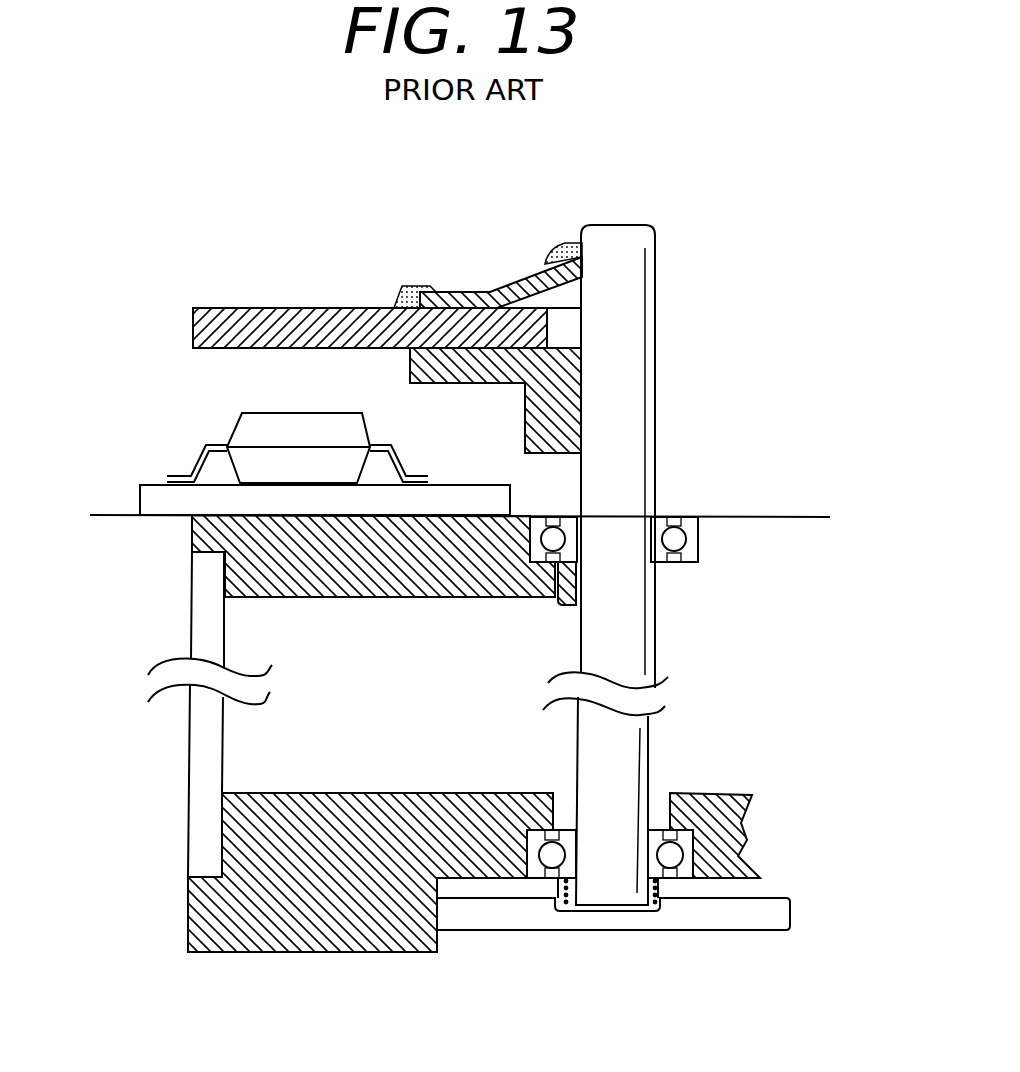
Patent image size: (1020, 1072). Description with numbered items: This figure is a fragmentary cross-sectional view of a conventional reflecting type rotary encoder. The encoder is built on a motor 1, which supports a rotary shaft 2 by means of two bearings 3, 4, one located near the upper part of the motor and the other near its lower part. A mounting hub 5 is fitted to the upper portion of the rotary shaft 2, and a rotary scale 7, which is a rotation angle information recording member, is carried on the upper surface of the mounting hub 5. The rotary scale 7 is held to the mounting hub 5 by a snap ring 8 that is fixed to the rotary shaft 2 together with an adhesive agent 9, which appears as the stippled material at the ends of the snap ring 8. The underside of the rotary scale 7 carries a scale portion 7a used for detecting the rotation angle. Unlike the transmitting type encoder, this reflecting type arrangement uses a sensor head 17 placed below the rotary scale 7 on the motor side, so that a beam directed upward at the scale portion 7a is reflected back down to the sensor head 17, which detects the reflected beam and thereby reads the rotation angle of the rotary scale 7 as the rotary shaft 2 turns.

The motor 1 is at (182, 912).
The rotary shaft 2 is at (633, 276).
The bearing 3 is at (698, 549).
The bearing 4 is at (693, 841).
The mounting hub 5 is at (472, 373).
The rotary scale 7 is at (343, 308).
The scale portion 7a is at (335, 445).
The snap ring 8 is at (505, 283).
The adhesive agent 9 is at (560, 246).
The sensor head 17 is at (189, 464).